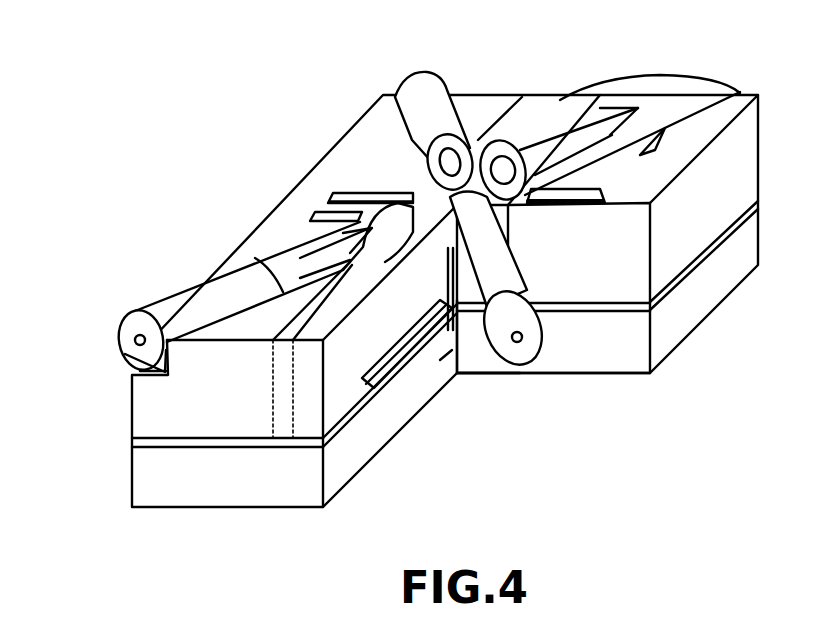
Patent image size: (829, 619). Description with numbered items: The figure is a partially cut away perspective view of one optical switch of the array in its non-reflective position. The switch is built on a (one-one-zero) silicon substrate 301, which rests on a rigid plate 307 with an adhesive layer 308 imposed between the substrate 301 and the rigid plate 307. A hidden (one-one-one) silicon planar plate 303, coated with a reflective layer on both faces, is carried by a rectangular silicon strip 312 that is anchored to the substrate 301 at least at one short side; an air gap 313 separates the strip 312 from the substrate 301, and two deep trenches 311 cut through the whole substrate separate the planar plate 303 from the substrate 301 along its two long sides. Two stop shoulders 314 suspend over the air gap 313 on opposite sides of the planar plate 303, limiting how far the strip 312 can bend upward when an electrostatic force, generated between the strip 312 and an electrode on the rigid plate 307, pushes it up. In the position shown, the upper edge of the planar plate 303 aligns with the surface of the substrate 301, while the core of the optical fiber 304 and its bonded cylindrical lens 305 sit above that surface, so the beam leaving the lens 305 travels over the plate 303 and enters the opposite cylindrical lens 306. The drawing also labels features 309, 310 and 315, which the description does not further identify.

The silicon substrate 301 is at (687, 223).
The hidden silicon planar plate 303 is at (420, 180).
The optical fiber 304 is at (217, 290).
The cylindrical lens 305 is at (300, 218).
The cylindrical lens 306 is at (426, 120).
The rigid plate 307 is at (590, 343).
The adhesive layer 308 is at (245, 447).
The fiber clamp 309 is at (122, 348).
The waveguide aperture 310 is at (560, 188).
The deep trenches 311 is at (520, 72).
The rectangular silicon strip 312 is at (407, 360).
The air gap 313 is at (440, 360).
The stop shoulders 314 is at (477, 373).
The inclined plate 315 is at (380, 387).